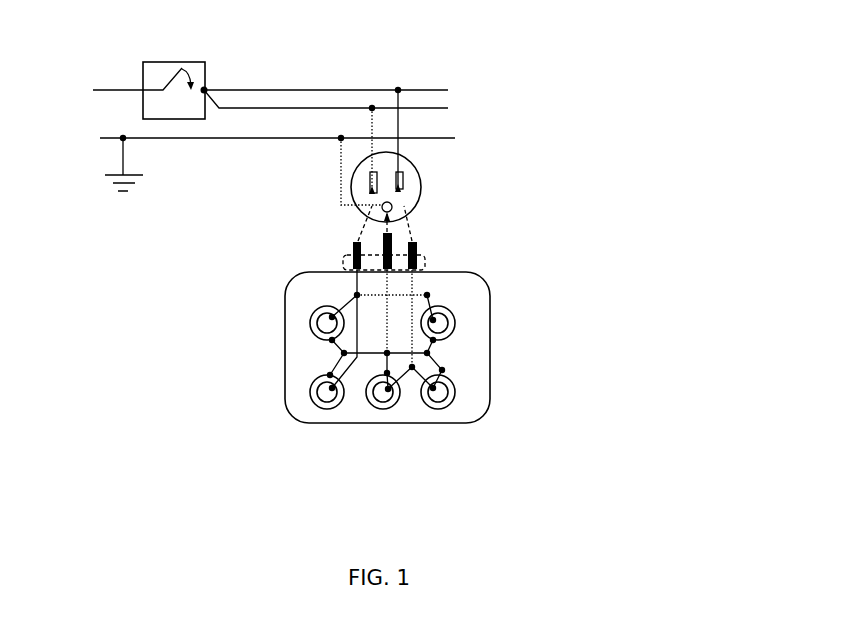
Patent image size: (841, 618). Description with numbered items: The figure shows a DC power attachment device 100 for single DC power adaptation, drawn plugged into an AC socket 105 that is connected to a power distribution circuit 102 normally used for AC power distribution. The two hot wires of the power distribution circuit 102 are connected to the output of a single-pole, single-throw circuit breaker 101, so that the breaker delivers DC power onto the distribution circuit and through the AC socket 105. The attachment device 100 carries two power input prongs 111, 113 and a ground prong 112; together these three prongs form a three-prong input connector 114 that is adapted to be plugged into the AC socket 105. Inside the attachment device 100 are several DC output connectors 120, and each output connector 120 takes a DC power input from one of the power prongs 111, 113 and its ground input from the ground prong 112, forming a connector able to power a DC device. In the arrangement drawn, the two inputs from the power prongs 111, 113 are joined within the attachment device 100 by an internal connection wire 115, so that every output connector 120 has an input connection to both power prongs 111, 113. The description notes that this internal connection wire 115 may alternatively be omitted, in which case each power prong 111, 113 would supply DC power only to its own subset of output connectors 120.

The DC power attachment device 100 is at (490, 308).
The SPST circuit breaker 101 is at (203, 43).
The power distribution circuit 102 is at (466, 92).
The AC socket 105 is at (422, 188).
The power prong 111 is at (355, 247).
The ground prong 112 is at (380, 236).
The power prong 113 is at (414, 243).
The 3-prong input connector 114 is at (428, 260).
The internal connection wire 115 is at (352, 279).
The output connector 120 is at (312, 378).